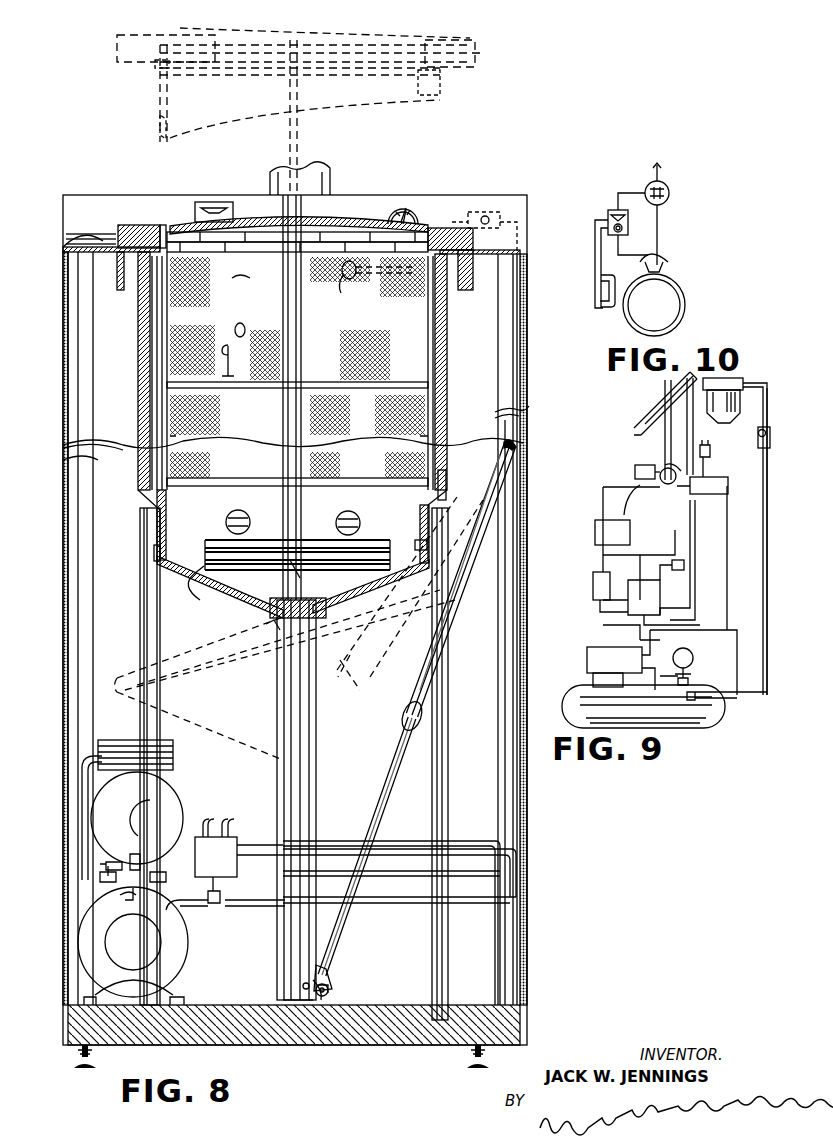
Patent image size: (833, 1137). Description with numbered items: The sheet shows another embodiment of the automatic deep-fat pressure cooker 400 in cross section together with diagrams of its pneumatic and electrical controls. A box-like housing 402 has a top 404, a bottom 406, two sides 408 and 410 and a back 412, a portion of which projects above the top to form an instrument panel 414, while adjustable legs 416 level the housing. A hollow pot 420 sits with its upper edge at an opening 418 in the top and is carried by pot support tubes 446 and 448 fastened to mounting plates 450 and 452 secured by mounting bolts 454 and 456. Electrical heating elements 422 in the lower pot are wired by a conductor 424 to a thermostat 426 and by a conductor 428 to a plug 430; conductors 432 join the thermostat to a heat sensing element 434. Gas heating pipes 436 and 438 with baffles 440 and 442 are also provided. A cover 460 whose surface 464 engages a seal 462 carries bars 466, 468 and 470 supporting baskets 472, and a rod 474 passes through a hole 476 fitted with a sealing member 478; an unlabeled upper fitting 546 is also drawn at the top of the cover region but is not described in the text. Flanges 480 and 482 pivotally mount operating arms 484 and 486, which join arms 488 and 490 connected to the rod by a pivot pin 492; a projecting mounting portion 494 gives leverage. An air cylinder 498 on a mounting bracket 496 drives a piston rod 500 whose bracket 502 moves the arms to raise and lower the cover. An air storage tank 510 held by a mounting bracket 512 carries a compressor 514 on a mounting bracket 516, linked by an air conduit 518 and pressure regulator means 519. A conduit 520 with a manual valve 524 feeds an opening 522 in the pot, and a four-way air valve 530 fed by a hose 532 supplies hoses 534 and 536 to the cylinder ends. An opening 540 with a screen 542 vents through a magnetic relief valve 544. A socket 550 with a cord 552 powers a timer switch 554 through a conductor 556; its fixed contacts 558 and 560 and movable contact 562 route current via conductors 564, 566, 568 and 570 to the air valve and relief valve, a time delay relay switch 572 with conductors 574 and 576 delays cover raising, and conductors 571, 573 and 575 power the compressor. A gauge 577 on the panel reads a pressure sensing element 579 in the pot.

In FIG. 8, the automatic deep-fat pressure cooker 400 is at (499, 168).
In FIG. 8, the housing 402 is at (63, 246).
In FIG. 8, the top 404 is at (70, 228).
In FIG. 8, the bottom 406 is at (367, 1044).
In FIG. 8, the side 408 is at (66, 556).
In FIG. 8, the side 410 is at (524, 946).
In FIG. 8, the back 412 is at (82, 320).
In FIG. 8, the instrument panel 414 is at (152, 199).
In FIG. 8, the legs 416 is at (74, 1060).
In FIG. 8, the opening 418 is at (444, 286).
In FIG. 8, the pot 420 is at (442, 343).
In FIG. 9, the pot 420 is at (735, 379).
In FIG. 8, the electrical heating elements 422 is at (212, 591).
In FIG. 10, the electrical heating elements 422 is at (689, 295).
In FIG. 10, the conductor 424 is at (672, 253).
In FIG. 8, the thermostat 426 is at (194, 197).
In FIG. 10, the thermostat 426 is at (614, 204).
In FIG. 10, the conductor 428 is at (666, 228).
In FIG. 10, the plug or receptacle 430 is at (672, 197).
In FIG. 10, the conductors 432 is at (596, 263).
In FIG. 8, the heat sensing element 434 is at (228, 341).
In FIG. 10, the heat sensing element 434 is at (602, 305).
In FIG. 8, the gas heating pipe 436 is at (240, 510).
In FIG. 8, the gas heating pipe 438 is at (342, 512).
In FIG. 8, the baffle 440 is at (226, 522).
In FIG. 8, the baffle 442 is at (362, 519).
In FIG. 8, the pot support tube 446 is at (148, 607).
In FIG. 8, the pot support tube 448 is at (447, 955).
In FIG. 8, the mounting plate 450 is at (154, 557).
In FIG. 8, the mounting plate 452 is at (426, 508).
In FIG. 8, the mounting bolt 454 is at (146, 581).
In FIG. 8, the mounting bolt 456 is at (445, 633).
In FIG. 8, the cover or lid 460 is at (184, 32).
In FIG. 8, the seal 462 is at (140, 223).
In FIG. 8, the surface 464 is at (158, 84).
In FIG. 8, the bar 466 is at (156, 120).
In FIG. 8, the bar 468 is at (308, 419).
In FIG. 8, the bar 470 is at (440, 80).
In FIG. 8, the baskets 472 is at (167, 382).
In FIG. 8, the rod 474 is at (302, 325).
In FIG. 8, the hole or opening 476 is at (294, 570).
In FIG. 8, the sealing member 478 is at (284, 574).
In FIG. 8, the mounting flange 480 is at (274, 617).
In FIG. 8, the mounting flange 482 is at (308, 620).
In FIG. 8, the operating arm 484 is at (210, 635).
In FIG. 8, the operating arm 486 is at (275, 665).
In FIG. 8, the operating arm 488 is at (270, 746).
In FIG. 8, the operating arm 490 is at (280, 689).
In FIG. 8, the pivot pin 492 is at (314, 1006).
In FIG. 8, the projecting mounting portion 494 is at (308, 757).
In FIG. 8, the mounting bracket 496 is at (518, 436).
In FIG. 8, the air cylinder 498 is at (429, 672).
In FIG. 9, the air cylinder 498 is at (666, 383).
In FIG. 8, the piston rod 500 is at (331, 725).
In FIG. 9, the piston rod 500 is at (648, 403).
In FIG. 8, the bracket 502 is at (331, 743).
In FIG. 8, the air storage tank 510 is at (94, 941).
In FIG. 9, the air storage tank 510 is at (688, 729).
In FIG. 8, the mounting bracket 512 is at (84, 990).
In FIG. 8, the air compressor 514 is at (108, 822).
In FIG. 9, the air compressor 514 is at (589, 650).
In FIG. 8, the mounting bracket 516 is at (106, 877).
In FIG. 8, the air conduit 518 is at (82, 789).
In FIG. 8, the pressure regulator means 519 is at (122, 909).
In FIG. 9, the pressure regulator means 519 is at (692, 656).
In FIG. 8, the air hose or conduit 520 is at (520, 209).
In FIG. 10, the air hose or conduit 520 is at (596, 215).
In FIG. 9, the air hose or conduit 520 is at (723, 701).
In FIG. 8, the aperture or opening 522 is at (342, 280).
In FIG. 8, the manually operated valve 524 is at (485, 205).
In FIG. 9, the manually operated valve 524 is at (757, 436).
In FIG. 8, the four-way air valve 530 is at (220, 829).
In FIG. 9, the four-way air valve 530 is at (639, 619).
In FIG. 8, the air conduit or hose 532 is at (220, 886).
In FIG. 9, the air conduit or hose 532 is at (648, 634).
In FIG. 8, the hose or conduit 534 is at (352, 842).
In FIG. 9, the hose or conduit 534 is at (725, 367).
In FIG. 8, the hose or conduit 536 is at (348, 868).
In FIG. 9, the hose or conduit 536 is at (638, 421).
In FIG. 8, the opening 540 is at (246, 290).
In FIG. 8, the screen 542 is at (297, 258).
In FIG. 9, the magnetic relief valve 544 is at (596, 540).
In FIG. 8, the feed chute 546 is at (336, 178).
In FIG. 9, the electrical inlet socket 550 is at (715, 479).
In FIG. 9, the cord or conductor 552 is at (708, 446).
In FIG. 8, the timer switch 554 is at (417, 200).
In FIG. 9, the timer switch 554 is at (635, 469).
In FIG. 9, the conductor 556 is at (668, 467).
In FIG. 9, the fixed contact 558 is at (637, 467).
In FIG. 9, the fixed contact 560 is at (603, 486).
In FIG. 8, the movable contact 562 is at (400, 202).
In FIG. 9, the movable contact 562 is at (615, 506).
In FIG. 9, the conductor 564 is at (648, 567).
In FIG. 9, the conductor 566 is at (683, 561).
In FIG. 9, the conductor 568 is at (595, 522).
In FIG. 9, the conductor 570 is at (601, 555).
In FIG. 9, the conductor 571 is at (730, 597).
In FIG. 9, the time delay relay switch 572 is at (593, 592).
In FIG. 9, the conductor 573 is at (685, 701).
In FIG. 9, the conductor 574 is at (600, 568).
In FIG. 9, the conductor 575 is at (642, 658).
In FIG. 9, the conductor 576 is at (601, 605).
In FIG. 8, the gauge 577 is at (358, 209).
In FIG. 8, the pressure sensing element 579 is at (240, 334).